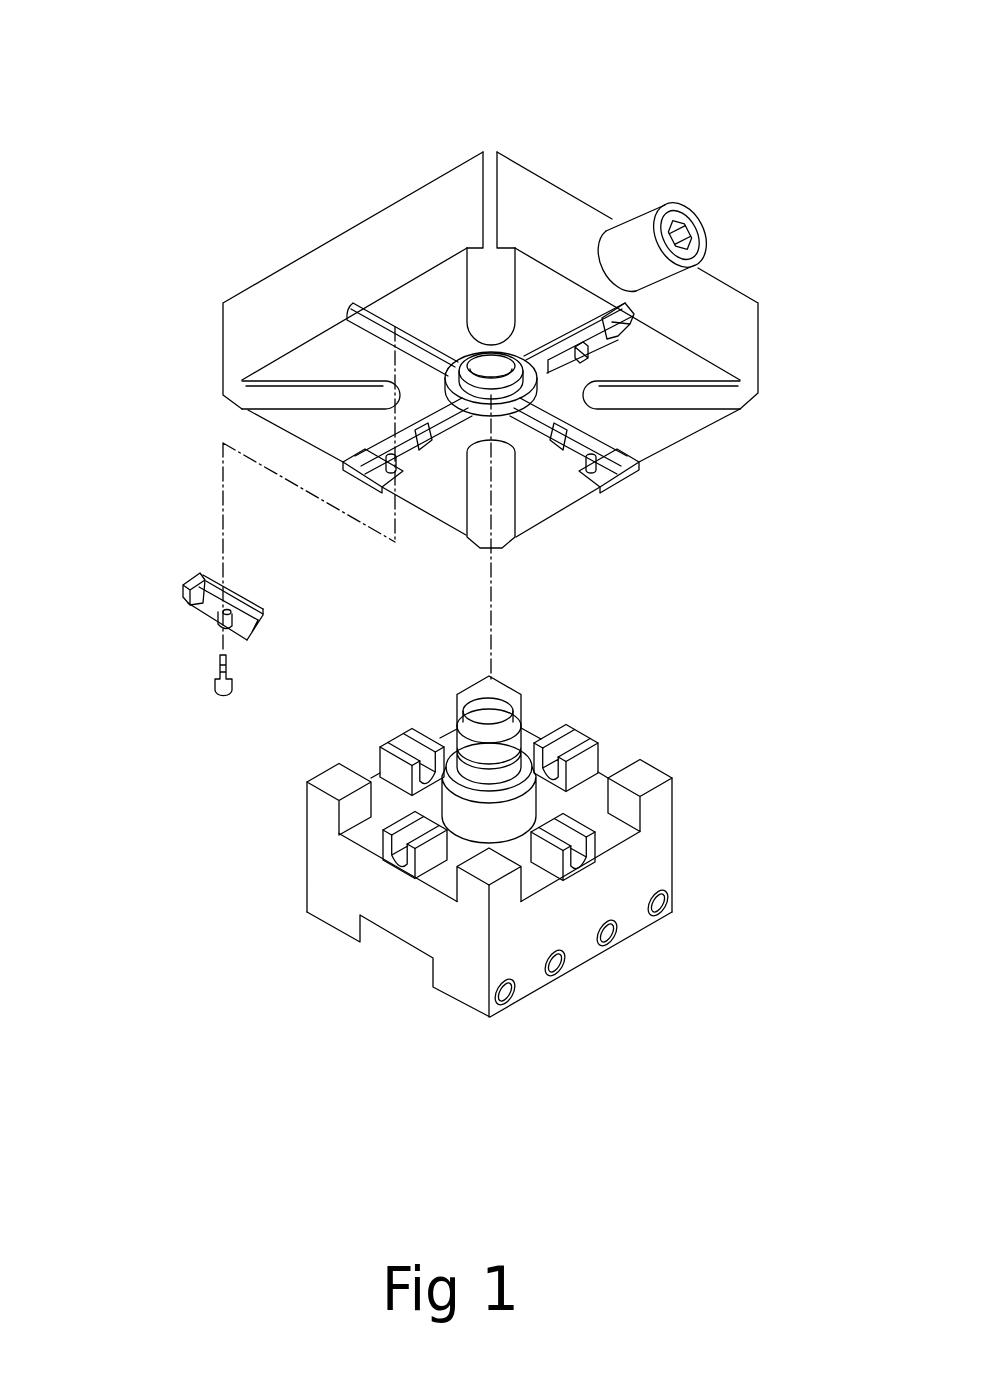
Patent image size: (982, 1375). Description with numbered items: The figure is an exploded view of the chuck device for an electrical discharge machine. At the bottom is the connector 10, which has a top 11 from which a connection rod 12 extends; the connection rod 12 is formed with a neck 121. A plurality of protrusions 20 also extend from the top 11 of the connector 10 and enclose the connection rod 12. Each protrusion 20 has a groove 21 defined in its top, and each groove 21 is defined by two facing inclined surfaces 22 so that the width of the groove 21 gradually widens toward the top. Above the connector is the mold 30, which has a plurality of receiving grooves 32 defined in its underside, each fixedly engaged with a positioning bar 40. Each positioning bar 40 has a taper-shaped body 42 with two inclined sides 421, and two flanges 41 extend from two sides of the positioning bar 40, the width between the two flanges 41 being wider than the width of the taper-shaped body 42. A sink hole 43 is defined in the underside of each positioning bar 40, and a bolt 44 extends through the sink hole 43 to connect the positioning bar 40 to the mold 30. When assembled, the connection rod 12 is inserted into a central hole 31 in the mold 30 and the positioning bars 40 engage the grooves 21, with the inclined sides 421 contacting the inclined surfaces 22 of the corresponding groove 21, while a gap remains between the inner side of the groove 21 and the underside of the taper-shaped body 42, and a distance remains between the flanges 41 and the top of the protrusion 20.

The connector 10 is at (442, 985).
The top 11 is at (537, 880).
The connection rod 12 is at (549, 792).
The neck 121 is at (497, 752).
The protrusions 20 is at (402, 862).
The groove 21 is at (400, 843).
The inclined surfaces 22 is at (600, 858).
The mold 30 is at (376, 170).
The central hole 31 is at (495, 390).
The receiving grooves 32 is at (347, 310).
The positioning bar 40 is at (233, 590).
The flanges 41 is at (183, 593).
The taper-shaped body 42 is at (183, 598).
The inclined sides 421 is at (262, 632).
The sink hole 43 is at (229, 618).
The bolt 44 is at (215, 681).